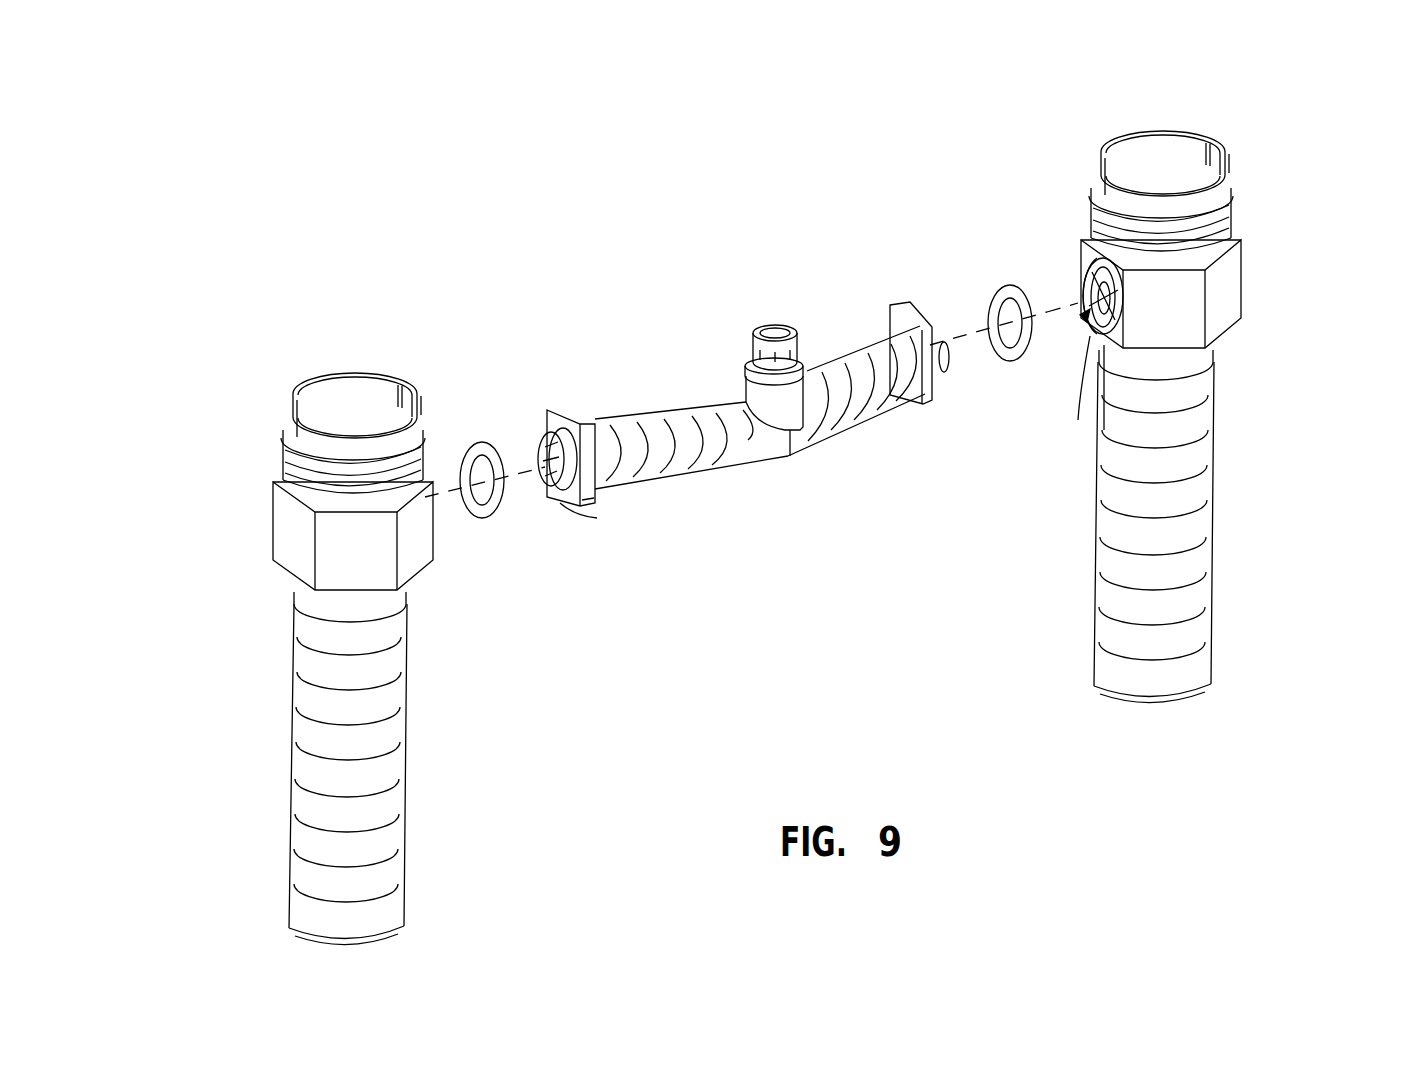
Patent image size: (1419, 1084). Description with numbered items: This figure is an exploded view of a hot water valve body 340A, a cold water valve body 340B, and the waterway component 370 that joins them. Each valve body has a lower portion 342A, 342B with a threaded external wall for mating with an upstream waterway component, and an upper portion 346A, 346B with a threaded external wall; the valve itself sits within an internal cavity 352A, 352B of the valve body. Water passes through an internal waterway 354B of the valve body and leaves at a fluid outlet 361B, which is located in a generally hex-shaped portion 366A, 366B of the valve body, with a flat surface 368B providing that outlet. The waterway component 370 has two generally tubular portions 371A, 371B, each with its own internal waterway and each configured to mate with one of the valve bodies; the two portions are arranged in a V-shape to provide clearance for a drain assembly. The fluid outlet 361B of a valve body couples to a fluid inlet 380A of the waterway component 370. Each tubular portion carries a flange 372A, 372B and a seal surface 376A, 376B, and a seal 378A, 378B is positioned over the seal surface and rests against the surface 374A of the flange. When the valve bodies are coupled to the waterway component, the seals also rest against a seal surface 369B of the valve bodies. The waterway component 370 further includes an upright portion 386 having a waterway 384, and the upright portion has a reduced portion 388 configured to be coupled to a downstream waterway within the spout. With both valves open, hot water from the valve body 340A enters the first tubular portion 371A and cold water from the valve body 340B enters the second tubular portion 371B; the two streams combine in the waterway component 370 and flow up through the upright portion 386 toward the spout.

The valve body 340A is at (250, 699).
The valve body 340B is at (1252, 480).
The lower portion 342A is at (275, 860).
The lower portion 342B is at (1226, 570).
The upper portion 346A is at (278, 437).
The upper portion 346B is at (1244, 203).
The internal cavity 352A is at (350, 422).
The internal cavity 352B is at (1157, 173).
The internal waterway 354B is at (1092, 338).
The fluid outlet 361B is at (1087, 314).
The portion 366A is at (268, 520).
The portion 366B is at (1256, 271).
The flat surface 368B is at (1104, 430).
The seal surface 369B is at (1113, 319).
The waterway component 370 is at (850, 322).
The tubular portion 371A is at (650, 395).
The tubular portion 371B is at (850, 450).
The flange 372A is at (553, 396).
The flange 372B is at (915, 292).
The surface 374A is at (598, 502).
The seal surface 376A is at (578, 510).
The seal surface 376B is at (926, 406).
The seal 378A is at (472, 442).
The seal 378B is at (998, 281).
The fluid inlet 380A is at (552, 486).
The waterway 384 is at (776, 326).
The upright portion 386 is at (740, 371).
The reduced portion 388 is at (795, 340).